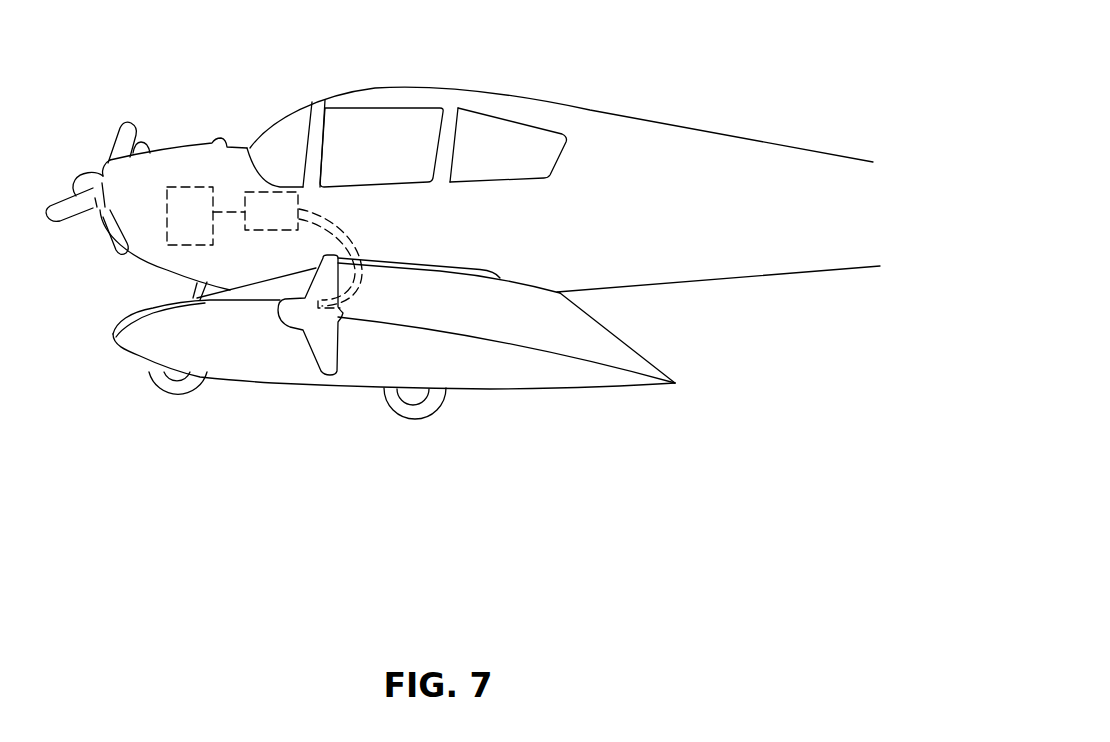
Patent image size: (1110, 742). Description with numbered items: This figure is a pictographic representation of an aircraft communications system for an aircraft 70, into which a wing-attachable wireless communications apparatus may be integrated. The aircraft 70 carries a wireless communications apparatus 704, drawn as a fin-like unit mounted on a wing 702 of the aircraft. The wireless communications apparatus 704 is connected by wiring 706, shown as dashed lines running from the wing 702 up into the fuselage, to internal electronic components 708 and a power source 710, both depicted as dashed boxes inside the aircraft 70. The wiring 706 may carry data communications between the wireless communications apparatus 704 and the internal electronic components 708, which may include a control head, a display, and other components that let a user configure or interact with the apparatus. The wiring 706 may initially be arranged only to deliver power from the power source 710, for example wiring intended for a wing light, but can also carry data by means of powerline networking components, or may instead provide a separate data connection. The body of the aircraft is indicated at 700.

The aircraft 70 is at (463, 298).
The manned aircraft 700 is at (596, 163).
The wing 702 is at (402, 348).
The wireless communications apparatus 704 is at (318, 327).
The wiring 706 is at (350, 240).
The internal electronic components 708 is at (260, 202).
The power source 710 is at (183, 207).